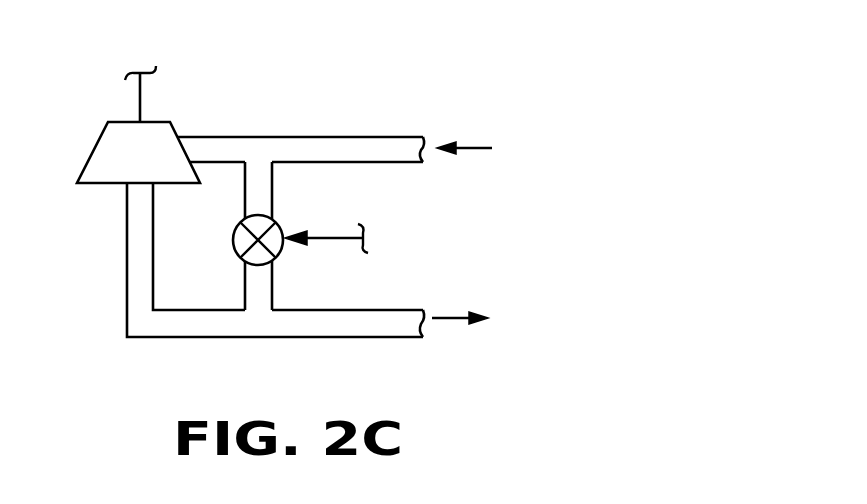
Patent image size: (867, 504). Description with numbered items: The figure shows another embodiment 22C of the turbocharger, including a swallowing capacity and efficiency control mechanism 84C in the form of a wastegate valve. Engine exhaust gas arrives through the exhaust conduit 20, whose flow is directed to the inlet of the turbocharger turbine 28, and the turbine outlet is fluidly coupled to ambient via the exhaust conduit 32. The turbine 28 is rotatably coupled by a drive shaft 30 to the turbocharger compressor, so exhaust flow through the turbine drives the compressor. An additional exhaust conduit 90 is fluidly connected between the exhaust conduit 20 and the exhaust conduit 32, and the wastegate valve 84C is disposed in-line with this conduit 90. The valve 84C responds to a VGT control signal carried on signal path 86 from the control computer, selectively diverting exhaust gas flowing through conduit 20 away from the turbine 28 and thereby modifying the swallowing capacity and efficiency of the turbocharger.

The turbocharger embodiment 22C is at (352, 117).
The turbocharger turbine 28 is at (93, 183).
The drive shaft 30 is at (142, 92).
The exhaust conduit 20 is at (270, 137).
The exhaust conduit 90 is at (245, 285).
The turbocharger swallowing capacity and efficiency control mechanism 84C is at (279, 254).
The signal path 86 is at (328, 238).
The exhaust conduit 32 is at (157, 337).